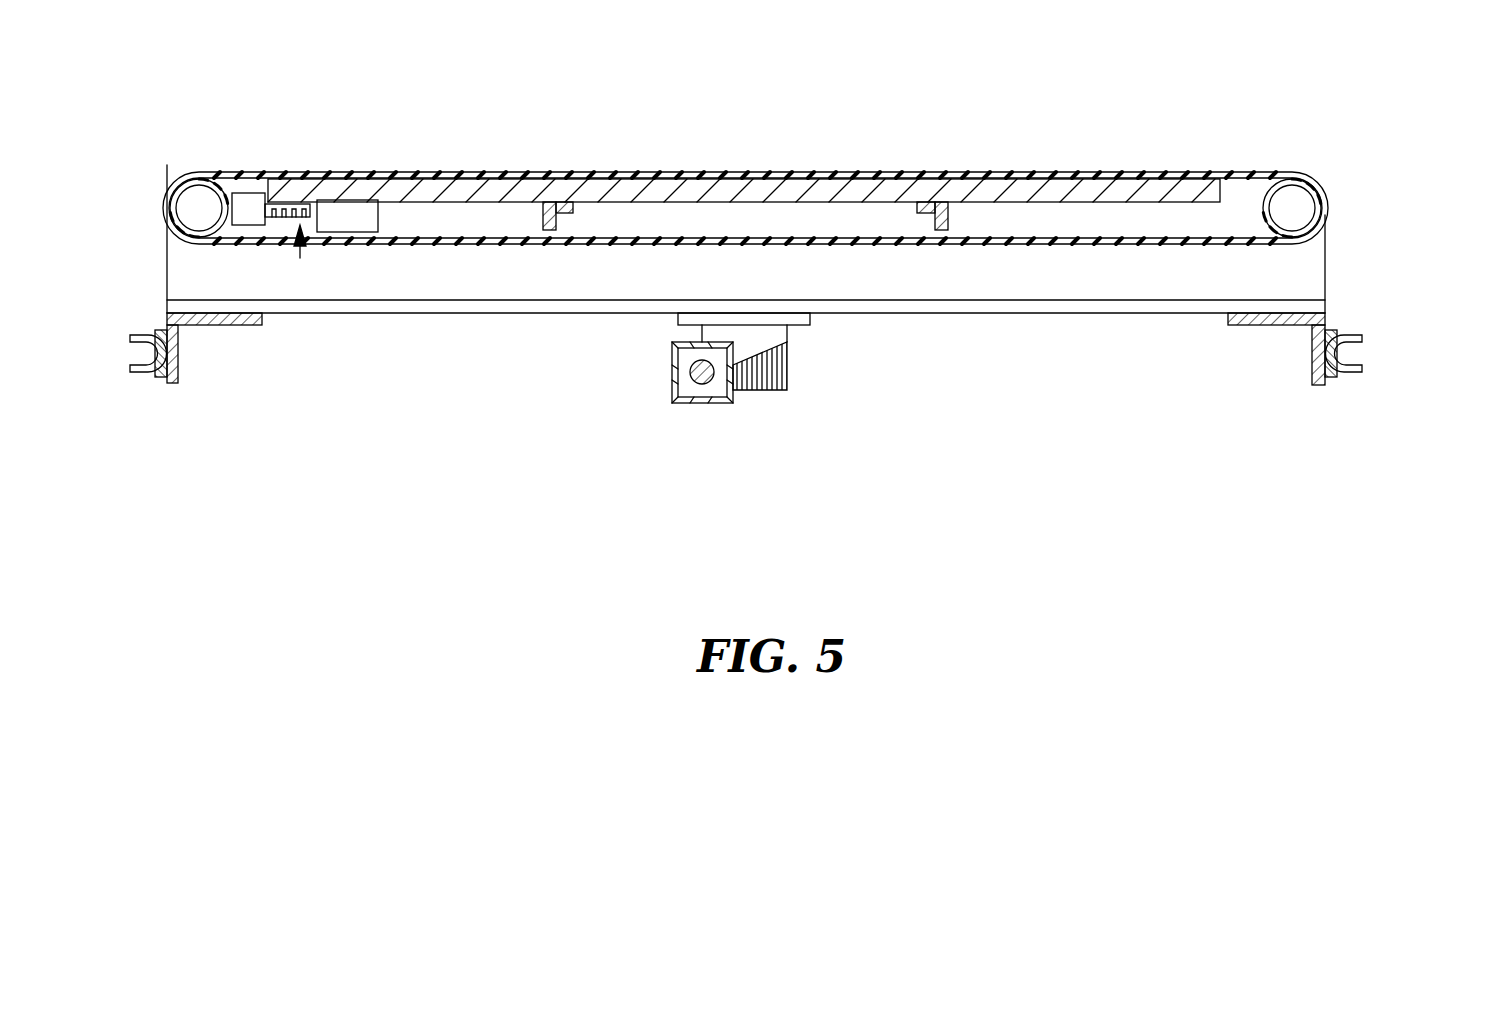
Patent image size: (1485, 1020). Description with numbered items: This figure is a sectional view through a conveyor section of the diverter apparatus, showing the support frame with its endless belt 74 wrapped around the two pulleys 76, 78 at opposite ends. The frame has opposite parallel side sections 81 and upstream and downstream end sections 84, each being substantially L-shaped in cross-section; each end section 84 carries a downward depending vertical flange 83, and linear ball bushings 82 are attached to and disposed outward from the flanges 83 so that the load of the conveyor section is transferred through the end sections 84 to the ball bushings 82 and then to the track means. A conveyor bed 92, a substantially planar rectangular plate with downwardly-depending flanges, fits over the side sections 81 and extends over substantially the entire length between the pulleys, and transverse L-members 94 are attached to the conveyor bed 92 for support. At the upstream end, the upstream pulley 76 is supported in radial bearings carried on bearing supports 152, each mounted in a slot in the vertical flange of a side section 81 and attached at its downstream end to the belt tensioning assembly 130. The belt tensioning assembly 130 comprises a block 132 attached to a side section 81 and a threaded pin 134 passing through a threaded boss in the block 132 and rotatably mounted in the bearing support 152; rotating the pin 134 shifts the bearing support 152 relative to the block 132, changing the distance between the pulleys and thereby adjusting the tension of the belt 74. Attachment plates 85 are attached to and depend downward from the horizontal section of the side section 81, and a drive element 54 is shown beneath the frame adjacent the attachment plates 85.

The drive motor 54 is at (680, 403).
The endless belt 74 is at (620, 172).
The upstream pulley 76 is at (187, 172).
The pulley 78 is at (1310, 176).
The side section 81 is at (167, 265).
The linear ball bushing 82 is at (145, 335).
The vertical flange 83 is at (178, 355).
The end section 84 is at (160, 383).
The attachment plate 85 is at (770, 390).
The conveyor bed 92 is at (1040, 195).
The transverse L-member 94 is at (548, 204).
The belt tensioning assembly 130 is at (300, 258).
The block 132 is at (345, 200).
The threaded pin 134 is at (290, 204).
The bearing support 152 is at (240, 197).